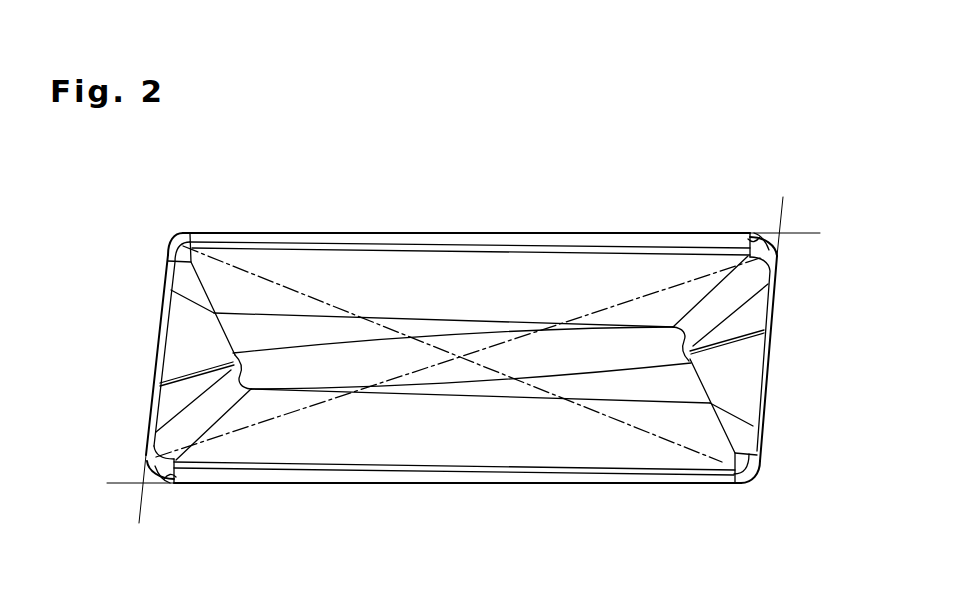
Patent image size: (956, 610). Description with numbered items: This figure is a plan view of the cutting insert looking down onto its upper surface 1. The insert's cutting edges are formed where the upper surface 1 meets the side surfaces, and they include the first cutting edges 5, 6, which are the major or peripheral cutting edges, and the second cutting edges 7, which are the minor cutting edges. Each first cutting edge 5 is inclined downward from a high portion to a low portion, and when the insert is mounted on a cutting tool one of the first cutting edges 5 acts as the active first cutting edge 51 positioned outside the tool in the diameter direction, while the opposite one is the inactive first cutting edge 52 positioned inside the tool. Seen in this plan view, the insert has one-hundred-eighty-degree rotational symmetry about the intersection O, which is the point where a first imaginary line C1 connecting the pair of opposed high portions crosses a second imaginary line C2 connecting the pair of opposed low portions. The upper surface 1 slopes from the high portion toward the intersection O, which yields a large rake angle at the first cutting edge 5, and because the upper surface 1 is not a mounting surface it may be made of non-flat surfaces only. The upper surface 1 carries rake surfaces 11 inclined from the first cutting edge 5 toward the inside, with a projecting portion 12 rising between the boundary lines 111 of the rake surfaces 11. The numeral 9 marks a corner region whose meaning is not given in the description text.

The upper surface 1 is at (404, 268).
The first cutting edge 5 is at (463, 366).
The active first cutting edge 51 is at (547, 485).
The inactive first cutting edge 52 is at (607, 232).
The first cutting edge 6 is at (778, 297).
The second cutting edge 7 is at (770, 390).
The corner 9 is at (776, 231).
The rake surface 11 is at (528, 270).
The boundary line 111 is at (487, 320).
The projecting portion 12 is at (333, 363).
The first imaginary line C1 is at (764, 258).
The second imaginary line C2 is at (183, 246).
The intersection O is at (510, 360).